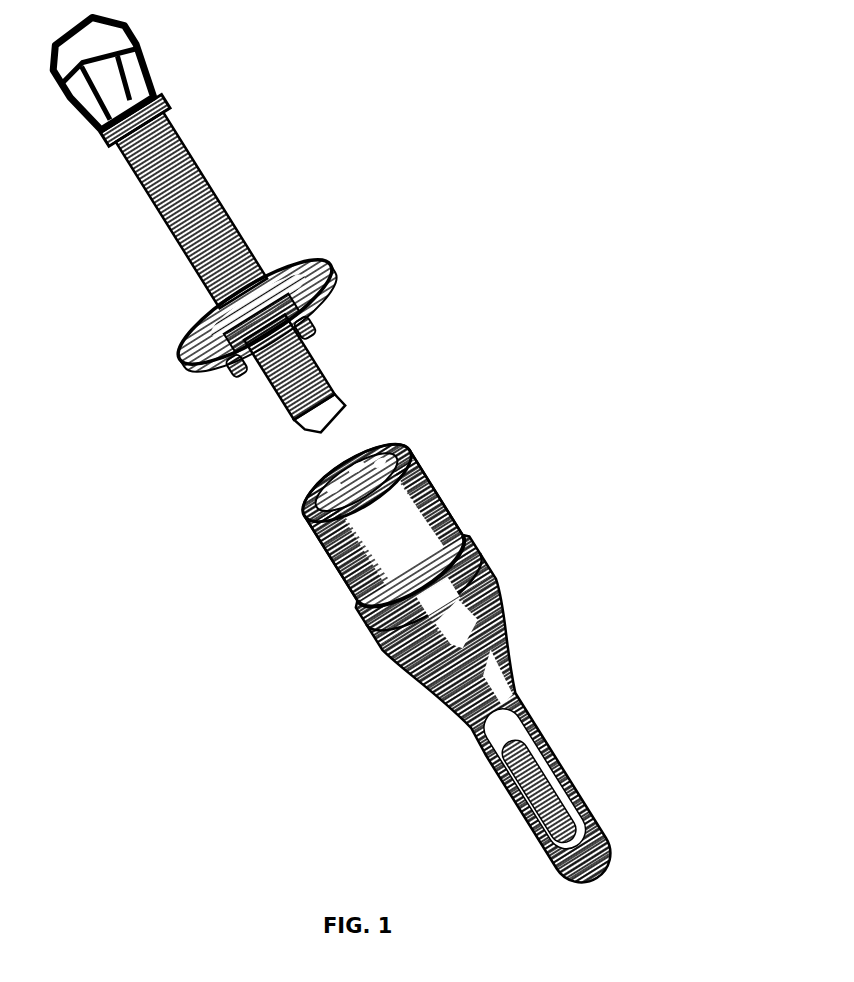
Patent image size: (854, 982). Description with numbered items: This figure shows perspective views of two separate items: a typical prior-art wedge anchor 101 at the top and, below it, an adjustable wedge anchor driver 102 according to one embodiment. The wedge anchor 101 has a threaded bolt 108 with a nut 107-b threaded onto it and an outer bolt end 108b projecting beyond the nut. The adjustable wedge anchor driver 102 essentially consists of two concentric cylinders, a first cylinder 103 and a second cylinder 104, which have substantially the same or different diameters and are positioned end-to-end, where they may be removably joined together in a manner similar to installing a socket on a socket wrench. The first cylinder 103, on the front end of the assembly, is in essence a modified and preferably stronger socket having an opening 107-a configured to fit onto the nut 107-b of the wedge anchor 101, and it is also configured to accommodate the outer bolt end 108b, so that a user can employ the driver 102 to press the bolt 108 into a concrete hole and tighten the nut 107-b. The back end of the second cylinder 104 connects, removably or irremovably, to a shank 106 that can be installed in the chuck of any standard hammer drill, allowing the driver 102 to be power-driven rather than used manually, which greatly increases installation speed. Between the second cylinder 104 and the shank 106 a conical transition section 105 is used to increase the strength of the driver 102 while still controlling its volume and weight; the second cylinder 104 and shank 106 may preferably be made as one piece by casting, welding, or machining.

The wedge anchor 101 is at (249, 237).
The adjustable wedge anchor driver 102 is at (469, 668).
The first cylinder 103 is at (296, 572).
The second cylinder 104 is at (358, 637).
The conical transition section 105 is at (404, 682).
The shank 106 is at (480, 813).
The opening 107-a is at (357, 471).
The nut 107-b is at (230, 377).
The bolt 108 is at (207, 177).
The outer bolt end 108b is at (359, 383).